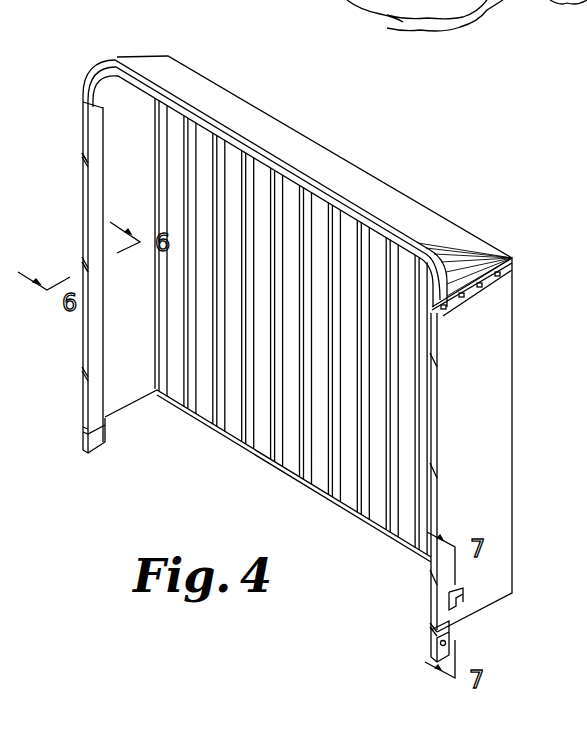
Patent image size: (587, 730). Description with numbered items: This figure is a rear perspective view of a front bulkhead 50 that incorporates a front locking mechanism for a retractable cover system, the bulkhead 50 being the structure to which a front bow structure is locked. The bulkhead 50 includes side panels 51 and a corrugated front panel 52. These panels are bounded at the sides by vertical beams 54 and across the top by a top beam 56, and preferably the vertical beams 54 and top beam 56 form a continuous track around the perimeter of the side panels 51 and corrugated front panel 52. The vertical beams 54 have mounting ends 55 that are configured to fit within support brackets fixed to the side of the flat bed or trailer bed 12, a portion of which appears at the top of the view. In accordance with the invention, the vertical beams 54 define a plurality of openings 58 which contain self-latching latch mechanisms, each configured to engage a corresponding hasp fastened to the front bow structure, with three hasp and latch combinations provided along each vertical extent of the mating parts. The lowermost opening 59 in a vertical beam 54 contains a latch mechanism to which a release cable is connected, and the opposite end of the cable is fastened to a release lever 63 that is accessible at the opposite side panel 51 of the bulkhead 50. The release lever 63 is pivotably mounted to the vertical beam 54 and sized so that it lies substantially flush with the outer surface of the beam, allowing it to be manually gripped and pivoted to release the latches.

The trailer bed 12 is at (515, 0).
The bulkhead 50 is at (370, 190).
The side panel 51 is at (492, 352).
The corrugated front panel 52 is at (310, 462).
The vertical beam 54 is at (98, 298).
The mounting end 55 is at (97, 443).
The top beam 56 is at (105, 62).
The opening 58 is at (82, 262).
The lowermost opening 59 is at (82, 372).
The release lever 63 is at (464, 598).